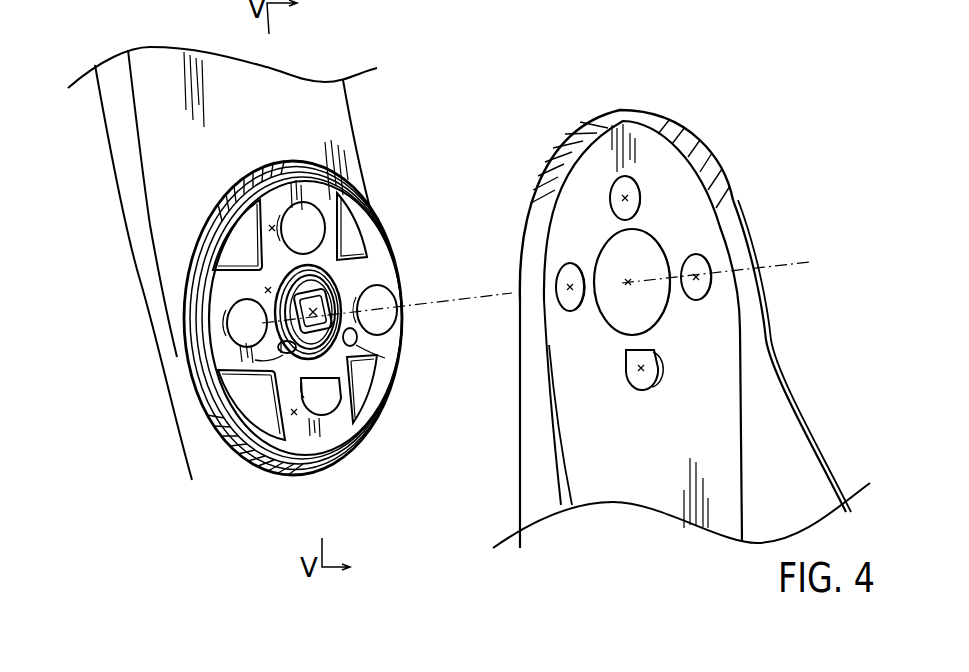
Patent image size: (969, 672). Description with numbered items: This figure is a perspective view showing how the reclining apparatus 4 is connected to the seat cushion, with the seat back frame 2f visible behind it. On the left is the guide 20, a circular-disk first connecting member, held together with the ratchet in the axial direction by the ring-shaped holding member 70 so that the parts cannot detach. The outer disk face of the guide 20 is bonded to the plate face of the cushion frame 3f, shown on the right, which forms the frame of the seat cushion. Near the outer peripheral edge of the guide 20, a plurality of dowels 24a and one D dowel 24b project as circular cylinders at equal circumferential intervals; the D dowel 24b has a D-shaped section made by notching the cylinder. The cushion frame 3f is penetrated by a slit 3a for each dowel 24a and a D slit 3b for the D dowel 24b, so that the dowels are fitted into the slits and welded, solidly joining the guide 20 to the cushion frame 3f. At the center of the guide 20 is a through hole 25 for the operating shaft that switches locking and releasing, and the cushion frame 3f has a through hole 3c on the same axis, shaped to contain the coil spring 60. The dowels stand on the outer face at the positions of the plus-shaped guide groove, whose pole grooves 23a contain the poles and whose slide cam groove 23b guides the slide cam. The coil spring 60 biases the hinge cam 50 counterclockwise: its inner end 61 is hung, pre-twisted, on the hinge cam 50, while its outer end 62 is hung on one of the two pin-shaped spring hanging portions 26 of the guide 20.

The arm portion of frame member 2 2f is at (176, 88).
The guide 20 is at (375, 390).
The holding member 70 is at (230, 206).
The reclining apparatus 4 is at (341, 210).
The dowel 24a is at (305, 228).
The D dowel 24b is at (323, 400).
The coil spring 60 is at (294, 268).
The inner end 61 is at (306, 290).
The through hole 25 is at (324, 304).
The spring hanging portion 26 is at (293, 349).
The outer end 62 is at (357, 338).
The hinge cam 50 is at (237, 319).
The pole groove 23a is at (273, 224).
The slide cam groove 23b is at (266, 288).
The cushion frame 3f is at (670, 172).
The slit 3a is at (572, 268).
The through hole 3c is at (629, 281).
The D slit 3b is at (648, 373).